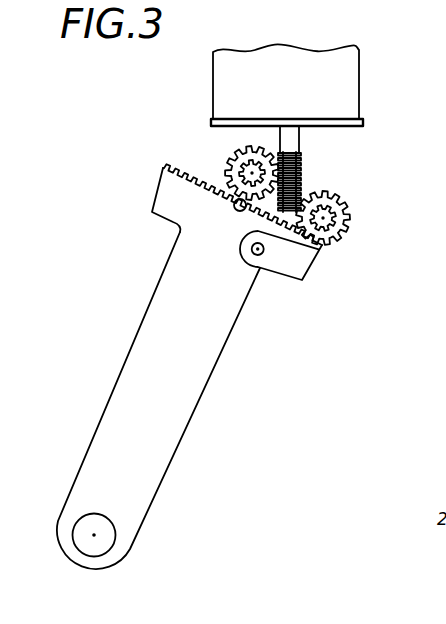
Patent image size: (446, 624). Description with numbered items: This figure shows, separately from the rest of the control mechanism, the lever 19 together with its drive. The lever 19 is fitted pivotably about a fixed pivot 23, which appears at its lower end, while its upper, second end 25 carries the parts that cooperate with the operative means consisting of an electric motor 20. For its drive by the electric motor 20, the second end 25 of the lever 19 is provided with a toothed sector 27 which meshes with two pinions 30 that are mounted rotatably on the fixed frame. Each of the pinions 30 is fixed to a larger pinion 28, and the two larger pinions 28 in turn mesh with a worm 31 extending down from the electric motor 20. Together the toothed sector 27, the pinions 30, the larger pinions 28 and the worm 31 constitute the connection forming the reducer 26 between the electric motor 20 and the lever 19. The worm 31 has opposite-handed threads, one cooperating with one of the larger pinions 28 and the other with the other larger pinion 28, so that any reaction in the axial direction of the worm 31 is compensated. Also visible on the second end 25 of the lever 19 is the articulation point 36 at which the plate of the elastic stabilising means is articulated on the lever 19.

The lever 19 is at (158, 400).
The electric motor 20 is at (353, 87).
The fixed pivot 23 is at (112, 540).
The second end of the lever 25 is at (163, 196).
The joint forming a reducer 26 is at (306, 182).
The toothed sector 27 is at (170, 163).
The larger pinion 28 is at (232, 156).
The pinion 30 is at (262, 146).
The worm 31 is at (298, 163).
The articulation point 36 is at (234, 207).